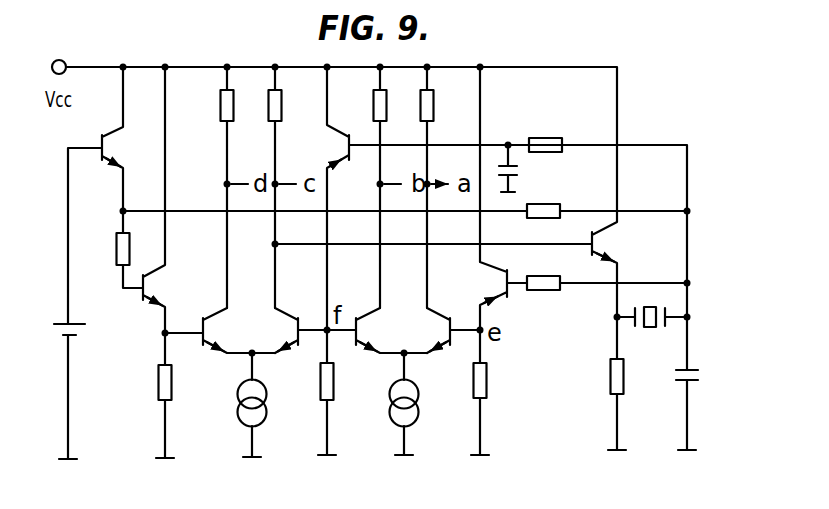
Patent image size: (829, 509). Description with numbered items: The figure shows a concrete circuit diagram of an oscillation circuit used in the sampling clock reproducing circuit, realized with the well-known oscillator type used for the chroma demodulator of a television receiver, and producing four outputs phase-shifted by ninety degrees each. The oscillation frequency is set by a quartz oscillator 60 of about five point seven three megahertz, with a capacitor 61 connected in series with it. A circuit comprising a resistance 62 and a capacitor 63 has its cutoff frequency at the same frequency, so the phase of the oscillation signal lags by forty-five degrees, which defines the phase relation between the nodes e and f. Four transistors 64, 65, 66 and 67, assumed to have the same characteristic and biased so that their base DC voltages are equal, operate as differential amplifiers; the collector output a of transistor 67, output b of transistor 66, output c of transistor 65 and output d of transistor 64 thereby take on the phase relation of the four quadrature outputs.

The quartz oscillator 60 is at (648, 305).
The capacitor 61 is at (696, 368).
The resistance 62 is at (545, 136).
The capacitor 63 is at (522, 170).
The transistor 64 is at (222, 315).
The transistor 65 is at (283, 316).
The transistor 66 is at (365, 315).
The transistor 67 is at (438, 316).